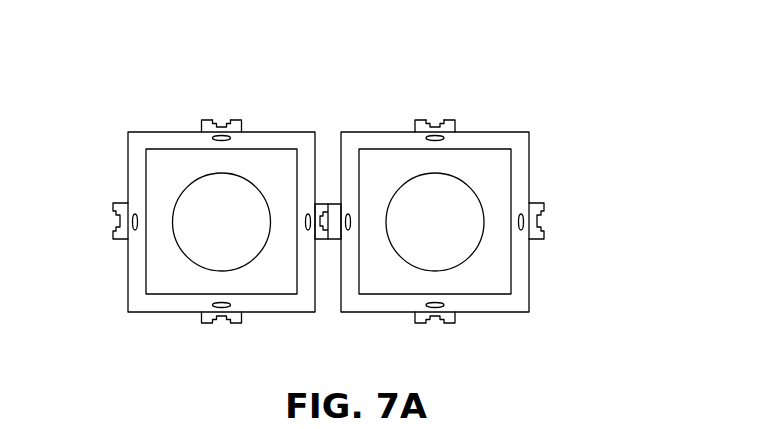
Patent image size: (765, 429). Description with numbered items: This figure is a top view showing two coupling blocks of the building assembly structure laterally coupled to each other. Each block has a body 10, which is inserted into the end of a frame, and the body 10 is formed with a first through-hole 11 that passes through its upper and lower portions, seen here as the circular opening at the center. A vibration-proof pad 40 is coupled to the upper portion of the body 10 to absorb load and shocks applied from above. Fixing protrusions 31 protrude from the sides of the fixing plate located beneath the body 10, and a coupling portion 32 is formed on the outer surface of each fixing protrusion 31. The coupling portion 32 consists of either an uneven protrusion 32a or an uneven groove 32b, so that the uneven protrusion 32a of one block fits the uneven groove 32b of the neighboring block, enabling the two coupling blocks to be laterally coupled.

The body 10 is at (135, 166).
The first through-hole 11 is at (193, 252).
The vibration-proof pad 40 is at (160, 254).
The fixing protrusion 31 is at (201, 127).
The coupling portion 32 is at (329, 68).
The uneven protrusion 32a is at (406, 85).
The uneven groove 32b is at (222, 121).